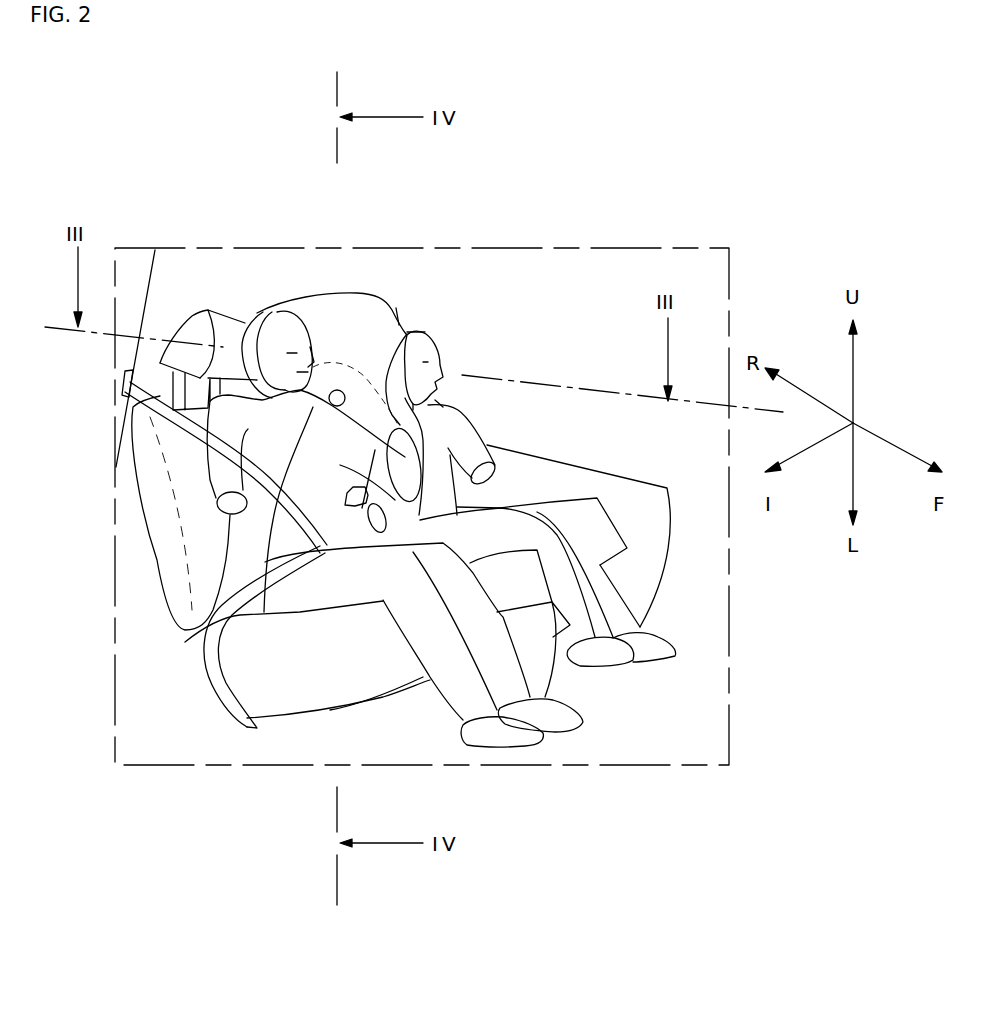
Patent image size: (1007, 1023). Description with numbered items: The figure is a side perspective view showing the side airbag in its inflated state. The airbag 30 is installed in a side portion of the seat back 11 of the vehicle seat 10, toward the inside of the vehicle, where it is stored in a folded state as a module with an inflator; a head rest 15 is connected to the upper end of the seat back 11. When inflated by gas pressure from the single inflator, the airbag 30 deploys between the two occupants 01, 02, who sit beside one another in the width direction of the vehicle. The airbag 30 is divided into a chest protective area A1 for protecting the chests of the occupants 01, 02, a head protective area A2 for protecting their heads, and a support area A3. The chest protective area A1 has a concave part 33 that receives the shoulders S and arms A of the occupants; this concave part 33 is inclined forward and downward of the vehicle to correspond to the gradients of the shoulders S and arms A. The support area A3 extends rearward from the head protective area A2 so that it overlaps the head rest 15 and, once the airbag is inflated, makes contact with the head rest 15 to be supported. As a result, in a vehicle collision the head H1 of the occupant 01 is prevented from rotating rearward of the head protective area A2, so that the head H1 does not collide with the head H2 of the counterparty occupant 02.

The vehicle seat 10 is at (600, 508).
The seat back 11 is at (167, 522).
The head rest 15 is at (180, 350).
The airbag 30 is at (357, 342).
The concave part 33 is at (336, 390).
The arms A is at (337, 427).
The chest protective area A1 is at (408, 334).
The head protective area A2 is at (381, 303).
The support area A3 is at (245, 310).
The head of occupant O1 H1 is at (267, 312).
The head of occupant O2 H2 is at (407, 333).
The occupant 01 is at (242, 558).
The occupant 02 is at (437, 418).
The shoulders S is at (264, 612).